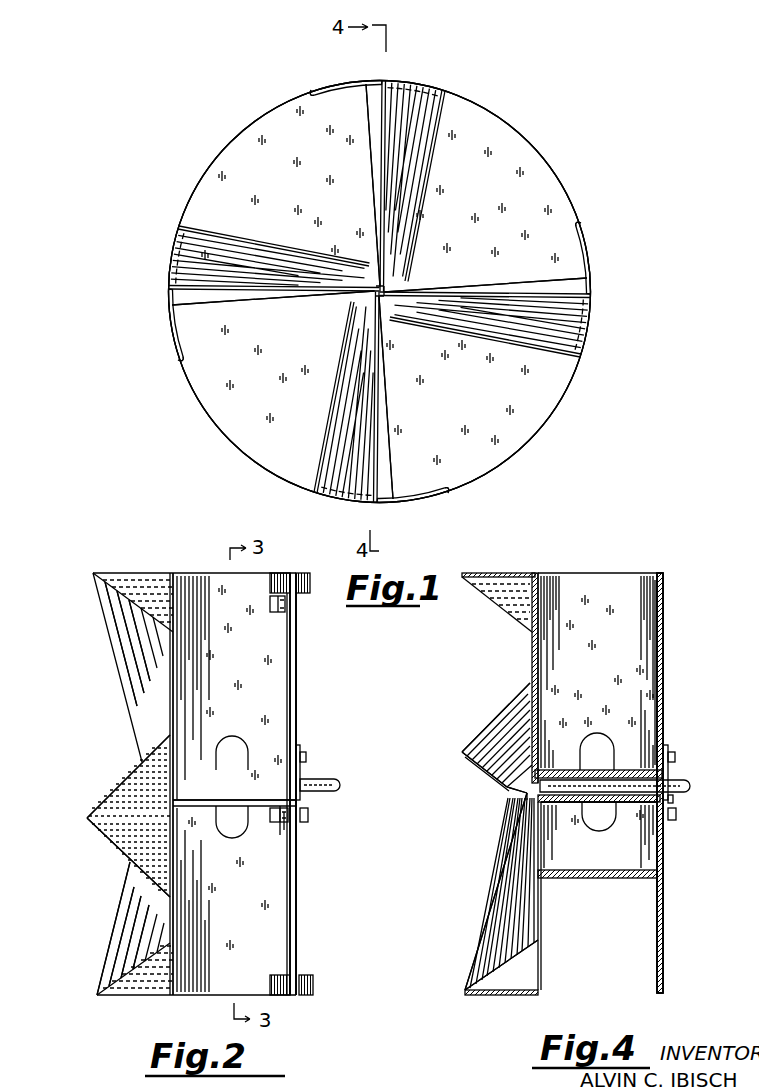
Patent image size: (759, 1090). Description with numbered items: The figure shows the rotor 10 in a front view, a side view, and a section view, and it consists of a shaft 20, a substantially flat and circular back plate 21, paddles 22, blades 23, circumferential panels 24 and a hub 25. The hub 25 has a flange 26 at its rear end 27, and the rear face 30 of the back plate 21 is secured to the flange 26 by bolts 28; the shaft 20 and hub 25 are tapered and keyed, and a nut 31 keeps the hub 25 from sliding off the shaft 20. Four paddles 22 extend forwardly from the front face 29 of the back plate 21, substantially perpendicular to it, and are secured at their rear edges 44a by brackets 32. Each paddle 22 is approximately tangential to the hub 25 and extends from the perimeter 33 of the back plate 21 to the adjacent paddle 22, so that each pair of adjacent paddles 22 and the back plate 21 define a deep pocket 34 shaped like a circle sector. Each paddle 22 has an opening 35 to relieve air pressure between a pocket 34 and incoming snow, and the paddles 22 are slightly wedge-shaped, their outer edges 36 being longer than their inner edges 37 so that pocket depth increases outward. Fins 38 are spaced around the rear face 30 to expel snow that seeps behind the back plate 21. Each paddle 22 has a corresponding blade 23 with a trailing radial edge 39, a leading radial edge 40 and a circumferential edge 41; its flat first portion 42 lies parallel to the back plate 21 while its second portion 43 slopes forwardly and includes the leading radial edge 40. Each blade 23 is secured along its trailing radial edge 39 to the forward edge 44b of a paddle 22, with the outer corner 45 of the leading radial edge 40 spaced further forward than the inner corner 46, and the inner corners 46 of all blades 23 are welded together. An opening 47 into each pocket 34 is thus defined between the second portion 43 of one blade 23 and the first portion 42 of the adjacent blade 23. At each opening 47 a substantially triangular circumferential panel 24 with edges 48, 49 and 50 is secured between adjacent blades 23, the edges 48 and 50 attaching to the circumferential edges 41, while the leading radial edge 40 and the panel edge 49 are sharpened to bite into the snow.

In FIG. 1, the rotor 10 is at (560, 182).
In FIG. 2, the rotor 10 is at (297, 682).
In FIG. 4, the rotor 10 is at (663, 588).
In FIG. 2, the shaft 20 is at (330, 780).
In FIG. 4, the shaft 20 is at (688, 780).
In FIG. 2, the back plate 21 is at (297, 623).
In FIG. 4, the back plate 21 is at (663, 648).
In FIG. 2, the paddle 22 is at (268, 575).
In FIG. 4, the paddle 22 is at (622, 580).
In FIG. 1, the blade 23 is at (495, 128).
In FIG. 2, the blade 23 is at (112, 658).
In FIG. 4, the blade 23 is at (490, 712).
In FIG. 1, the circumferential panel 24 is at (586, 239).
In FIG. 2, the circumferential panel 24 is at (125, 572).
In FIG. 4, the circumferential panel 24 is at (502, 572).
In FIG. 4, the hub 25 is at (630, 808).
In FIG. 2, the flange 26 is at (300, 752).
In FIG. 4, the flange 26 is at (666, 745).
In FIG. 4, the rear end 27 is at (672, 800).
In FIG. 2, the bolt 28 is at (306, 757).
In FIG. 4, the bolt 28 is at (675, 757).
In FIG. 2, the front face 29 is at (288, 665).
In FIG. 4, the front face 29 is at (655, 635).
In FIG. 2, the rear face 30 is at (297, 645).
In FIG. 4, the rear face 30 is at (663, 610).
In FIG. 4, the nut 31 is at (527, 800).
In FIG. 2, the bracket 32 is at (275, 612).
In FIG. 2, the perimeter 33 is at (298, 890).
In FIG. 4, the perimeter 33 is at (663, 992).
In FIG. 2, the pocket 34 is at (185, 572).
In FIG. 4, the pocket 34 is at (590, 585).
In FIG. 2, the opening 35 is at (232, 735).
In FIG. 4, the opening 35 is at (596, 832).
In FIG. 2, the outer edge 36 is at (208, 572).
In FIG. 4, the outer edge 36 is at (562, 572).
In FIG. 2, the inner edge 37 is at (192, 800).
In FIG. 4, the inner edge 37 is at (556, 808).
In FIG. 2, the fin 38 is at (305, 575).
In FIG. 1, the trailing radial edge 39 is at (367, 103).
In FIG. 1, the leading radial edge 40 is at (382, 158).
In FIG. 1, the circumferential edge 41 is at (232, 134).
In FIG. 1, the first portion 42 is at (262, 122).
In FIG. 2, the first portion 42 is at (165, 690).
In FIG. 4, the first portion 42 is at (530, 630).
In FIG. 1, the second portion 43 is at (436, 118).
In FIG. 2, the second portion 43 is at (125, 678).
In FIG. 4, the second portion 43 is at (515, 690).
In FIG. 2, the rear edge 44a is at (290, 722).
In FIG. 4, the rear edge 44a is at (663, 672).
In FIG. 2, the forward edge 44b is at (175, 700).
In FIG. 4, the forward edge 44b is at (537, 660).
In FIG. 1, the outer corner 45 is at (388, 77).
In FIG. 2, the outer corner 45 is at (100, 598).
In FIG. 4, the outer corner 45 is at (470, 755).
In FIG. 1, the inner corner 46 is at (399, 290).
In FIG. 4, the inner corner 46 is at (505, 785).
In FIG. 1, the opening 47 is at (378, 183).
In FIG. 2, the opening 47 is at (130, 880).
In FIG. 4, the opening 47 is at (497, 875).
In FIG. 2, the edge 48 is at (110, 850).
In FIG. 1, the edge 49 is at (313, 86).
In FIG. 2, the edge 49 is at (120, 778).
In FIG. 2, the edge 50 is at (143, 762).